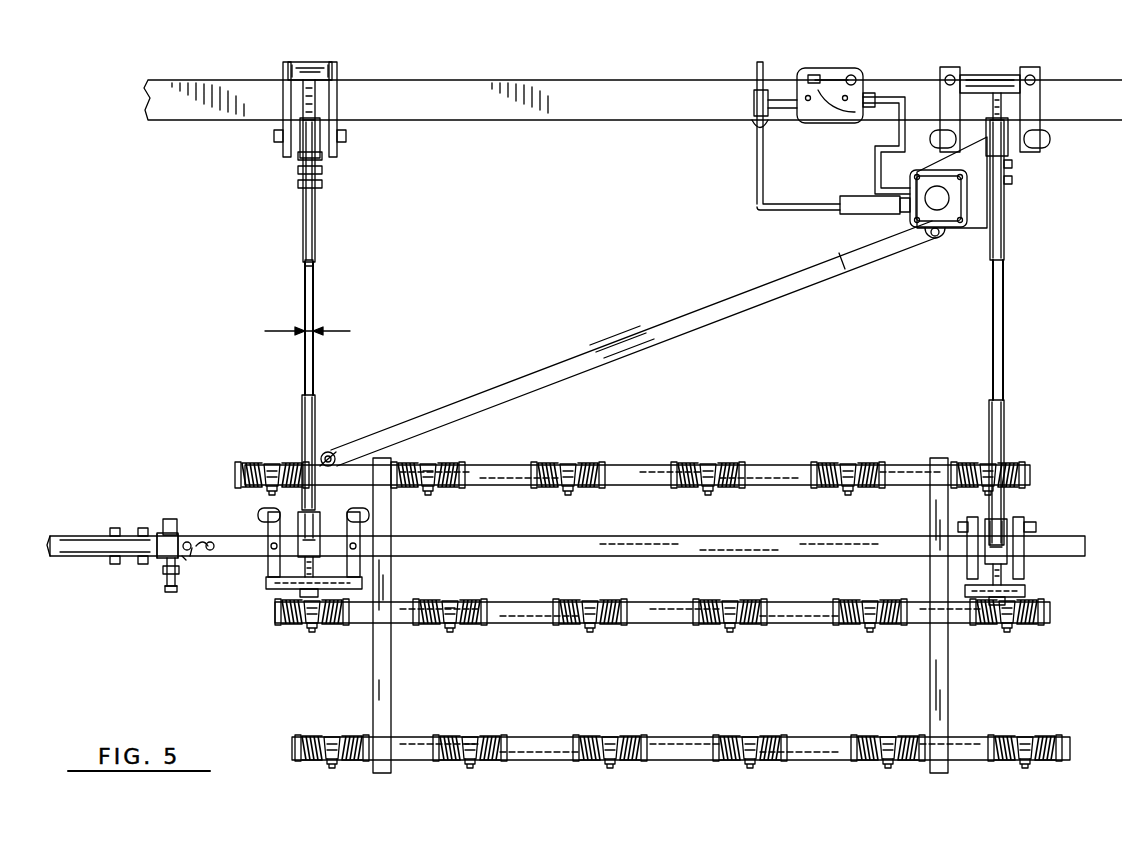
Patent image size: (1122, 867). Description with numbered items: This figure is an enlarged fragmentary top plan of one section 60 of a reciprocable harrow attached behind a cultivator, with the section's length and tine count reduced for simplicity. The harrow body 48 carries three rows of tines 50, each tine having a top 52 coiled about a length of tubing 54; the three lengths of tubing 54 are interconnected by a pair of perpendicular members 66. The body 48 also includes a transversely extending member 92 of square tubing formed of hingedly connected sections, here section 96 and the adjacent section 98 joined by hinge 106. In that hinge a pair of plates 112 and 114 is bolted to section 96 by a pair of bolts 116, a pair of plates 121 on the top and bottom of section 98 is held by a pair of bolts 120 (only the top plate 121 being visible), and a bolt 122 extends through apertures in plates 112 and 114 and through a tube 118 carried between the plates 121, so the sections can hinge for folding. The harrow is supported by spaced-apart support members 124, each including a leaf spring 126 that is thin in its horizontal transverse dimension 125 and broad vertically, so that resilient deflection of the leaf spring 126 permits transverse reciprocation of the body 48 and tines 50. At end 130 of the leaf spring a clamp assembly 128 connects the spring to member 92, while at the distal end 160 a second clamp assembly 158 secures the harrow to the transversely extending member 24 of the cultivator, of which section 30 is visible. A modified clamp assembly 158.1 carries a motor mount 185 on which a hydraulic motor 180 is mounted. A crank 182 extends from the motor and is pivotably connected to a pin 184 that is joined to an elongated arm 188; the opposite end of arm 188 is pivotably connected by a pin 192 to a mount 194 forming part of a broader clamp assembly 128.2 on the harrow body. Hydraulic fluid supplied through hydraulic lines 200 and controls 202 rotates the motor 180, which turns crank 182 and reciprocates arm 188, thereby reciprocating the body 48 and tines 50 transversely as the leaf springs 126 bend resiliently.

The transversely extending member 24 is at (607, 118).
The section of member 30 is at (690, 100).
The body 48 is at (765, 458).
The tines 50 is at (586, 462).
The top 52 is at (556, 462).
The length of tubing 54 is at (625, 470).
The section 60 is at (700, 432).
The perpendicular members 66 is at (375, 695).
The transversely extending member 92 is at (610, 548).
The section 96 is at (80, 532).
The section 98 is at (242, 545).
The hinge 106 is at (186, 558).
The plate 112 is at (168, 518).
The plate 114 is at (165, 556).
The bolts 116 is at (140, 527).
The tube 118 is at (165, 580).
The bolts 120 is at (213, 552).
The plates 121 is at (190, 540).
The bolt 122 is at (171, 586).
The support members 124 is at (318, 300).
The horizontal transverse dimension 125 is at (282, 330).
The leaf spring 126 is at (304, 295).
The clamp assembly 128 is at (1026, 522).
The clamp assembly 128.2 is at (262, 600).
The end 130 is at (300, 410).
The second clamp assemblies 158 is at (345, 138).
The clamp assembly 158.1 is at (1026, 150).
The end 160 is at (322, 216).
The hydraulic motor 180 is at (940, 238).
The crank 182 is at (918, 228).
The pin 184 is at (933, 240).
The motor mount 185 is at (980, 200).
The elongated arm 188 is at (595, 355).
The pin 192 is at (336, 452).
The mount 194 is at (324, 450).
The hydraulic lines 200 is at (864, 158).
The controls 202 is at (835, 125).